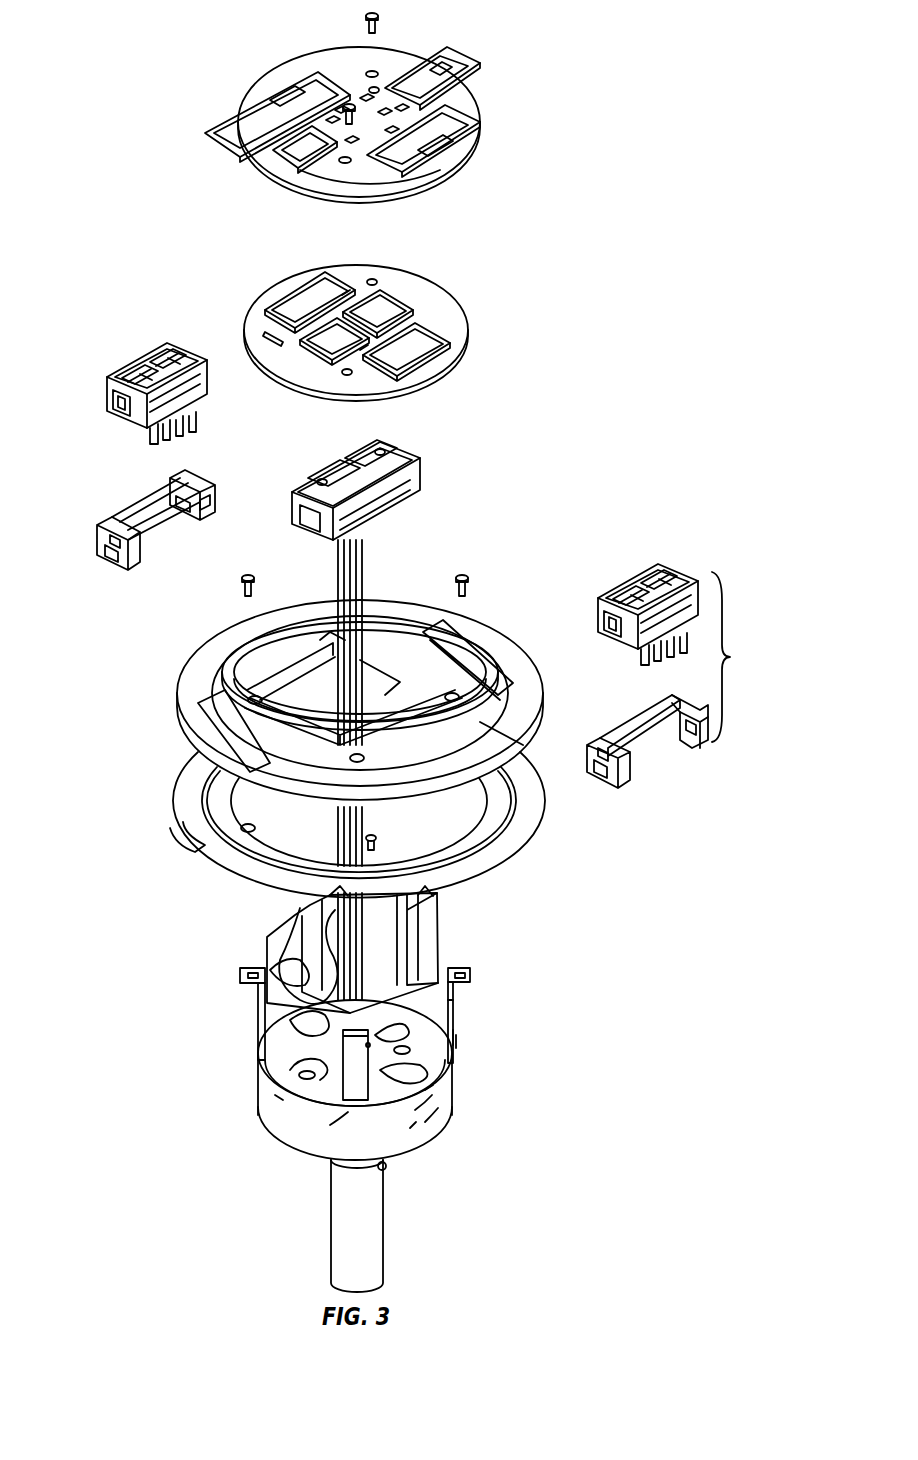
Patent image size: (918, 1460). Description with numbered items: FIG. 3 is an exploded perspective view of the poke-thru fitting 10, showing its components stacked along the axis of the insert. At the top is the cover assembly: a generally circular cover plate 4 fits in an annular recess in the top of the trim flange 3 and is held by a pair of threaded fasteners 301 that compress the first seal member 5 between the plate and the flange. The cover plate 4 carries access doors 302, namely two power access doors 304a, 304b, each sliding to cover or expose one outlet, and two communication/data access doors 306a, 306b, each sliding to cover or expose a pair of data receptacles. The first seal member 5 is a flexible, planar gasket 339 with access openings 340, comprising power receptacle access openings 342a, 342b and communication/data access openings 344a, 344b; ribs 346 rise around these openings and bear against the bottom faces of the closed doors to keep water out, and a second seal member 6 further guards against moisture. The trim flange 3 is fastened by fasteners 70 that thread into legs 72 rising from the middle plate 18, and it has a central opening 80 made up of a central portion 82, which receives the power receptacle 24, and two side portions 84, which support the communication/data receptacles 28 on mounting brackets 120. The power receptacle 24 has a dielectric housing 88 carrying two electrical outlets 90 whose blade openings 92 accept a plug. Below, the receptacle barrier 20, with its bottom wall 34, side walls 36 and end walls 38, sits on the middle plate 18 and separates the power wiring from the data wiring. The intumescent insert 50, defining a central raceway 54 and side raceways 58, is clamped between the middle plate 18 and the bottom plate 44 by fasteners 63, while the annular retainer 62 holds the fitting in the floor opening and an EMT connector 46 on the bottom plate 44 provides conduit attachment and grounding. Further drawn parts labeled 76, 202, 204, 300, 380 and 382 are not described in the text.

The trim flange 3 is at (312, 700).
The cover plate 4 is at (308, 52).
The first seal member 5 is at (371, 313).
The second seal member 6 is at (376, 825).
The poke-thru fitting 10 is at (662, 188).
The middle plate 18 is at (325, 1095).
The receptacle barrier 20 is at (365, 974).
The power receptacle 24 is at (390, 508).
The communication/data receptacles 28 is at (665, 570).
The bottom wall 34 is at (285, 1020).
The side walls 36 is at (293, 940).
The end walls 38 is at (448, 903).
The bottom plate 44 is at (342, 1146).
The electrical metalized tubing connector 46 is at (368, 1220).
The intumescent insert 50 is at (265, 1112).
The central raceway 54 is at (342, 1109).
The side raceways 58 is at (440, 1075).
The annular retainer 62 is at (455, 1034).
The fasteners 63 is at (272, 1095).
The fasteners 70 is at (240, 594).
The legs 72 is at (455, 1000).
The ring inner edge 76 is at (193, 672).
The central opening 80 is at (515, 742).
The central portion 82 is at (235, 740).
The side portions 84 is at (245, 690).
The housing 88 is at (374, 478).
The electrical outlets 90 is at (322, 475).
The blade openings 92 is at (360, 460).
The mounting brackets 120 is at (684, 680).
The receptacle module 202 is at (112, 412).
The receptacle bracket 204 is at (105, 545).
The support plate 300 is at (225, 722).
The threaded fasteners 301 is at (380, 22).
The access doors 302 is at (346, 117).
The power access door 304a is at (275, 172).
The power access door 304b is at (468, 60).
The communication/data access door 306a is at (478, 150).
The communication/data access door 306b is at (215, 125).
The gasket 339 is at (455, 325).
The access openings 340 is at (371, 291).
The power receptacle access opening 342a is at (330, 332).
The power receptacle access opening 342b is at (378, 292).
The communication/data access opening 344a is at (418, 342).
The communication/data access opening 344b is at (300, 300).
The ribs 346 is at (452, 340).
The gasket inner ring 380 is at (498, 808).
The gasket inner edge 382 is at (505, 845).